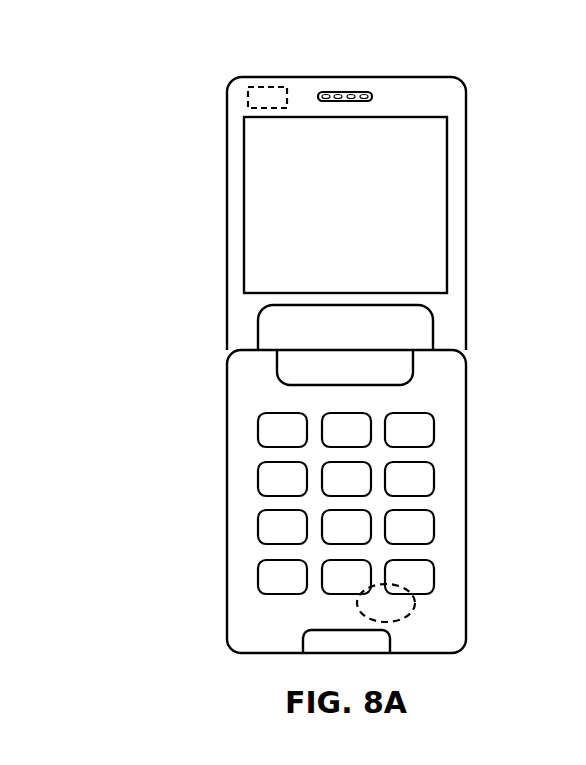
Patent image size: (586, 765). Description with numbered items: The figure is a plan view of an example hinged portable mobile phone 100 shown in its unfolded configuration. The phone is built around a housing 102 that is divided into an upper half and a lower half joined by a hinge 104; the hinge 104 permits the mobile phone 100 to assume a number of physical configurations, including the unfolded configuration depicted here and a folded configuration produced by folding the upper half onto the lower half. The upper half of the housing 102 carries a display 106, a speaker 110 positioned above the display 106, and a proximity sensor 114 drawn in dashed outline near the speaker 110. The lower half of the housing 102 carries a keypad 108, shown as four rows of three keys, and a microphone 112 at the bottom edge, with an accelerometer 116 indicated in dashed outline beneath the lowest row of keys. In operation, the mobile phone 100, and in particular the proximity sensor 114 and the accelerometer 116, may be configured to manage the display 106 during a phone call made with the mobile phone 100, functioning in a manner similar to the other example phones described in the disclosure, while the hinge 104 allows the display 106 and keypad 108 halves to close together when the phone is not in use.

The mobile phone 100 is at (250, 52).
The housing 102 is at (397, 77).
The hinge 104 is at (402, 327).
The display 106 is at (435, 163).
The keypad 108 is at (270, 402).
The speaker 110 is at (345, 92).
The microphone 112 is at (302, 643).
The proximity sensor 114 is at (248, 95).
The accelerometer 116 is at (408, 613).